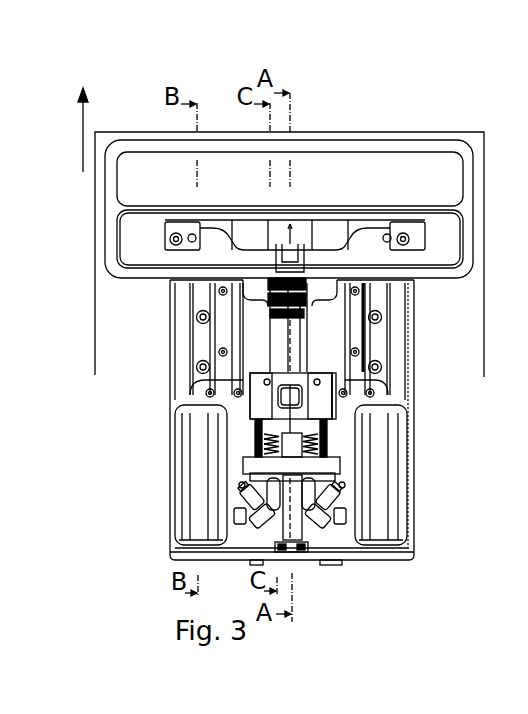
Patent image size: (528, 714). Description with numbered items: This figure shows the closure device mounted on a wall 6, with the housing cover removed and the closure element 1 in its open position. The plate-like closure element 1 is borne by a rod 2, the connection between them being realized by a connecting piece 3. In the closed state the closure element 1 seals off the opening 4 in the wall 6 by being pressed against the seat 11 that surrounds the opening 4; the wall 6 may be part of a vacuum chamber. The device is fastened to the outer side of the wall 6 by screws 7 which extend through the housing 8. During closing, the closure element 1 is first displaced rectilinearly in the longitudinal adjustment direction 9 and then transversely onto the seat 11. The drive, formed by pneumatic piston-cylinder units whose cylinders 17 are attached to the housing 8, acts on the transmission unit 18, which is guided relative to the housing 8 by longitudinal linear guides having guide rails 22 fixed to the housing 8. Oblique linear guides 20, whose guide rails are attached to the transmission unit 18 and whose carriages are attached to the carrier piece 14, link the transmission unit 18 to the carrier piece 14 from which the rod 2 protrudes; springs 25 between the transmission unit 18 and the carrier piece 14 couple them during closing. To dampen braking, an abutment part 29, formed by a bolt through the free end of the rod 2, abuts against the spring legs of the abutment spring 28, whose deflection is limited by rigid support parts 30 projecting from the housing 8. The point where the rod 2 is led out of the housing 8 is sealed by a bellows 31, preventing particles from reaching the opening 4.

The closure element 1 is at (130, 243).
The rod 2 is at (290, 343).
The connecting piece 3 is at (232, 228).
The opening 4 is at (138, 173).
The wall 6 is at (475, 140).
The screws 7 is at (203, 318).
The housing 8 is at (170, 394).
The longitudinal adjustment direction 9 is at (83, 150).
The seat 11 is at (422, 148).
The carrier piece 14 is at (302, 420).
The cylinders 17 is at (197, 520).
The transmission unit 18 is at (237, 473).
The oblique linear guide 20 is at (333, 405).
The guide rail 22 is at (222, 297).
The springs 25 is at (312, 445).
The abutment spring 28 is at (266, 504).
The abutment part 29 is at (306, 549).
The support part 30 is at (268, 483).
The bellows 31 is at (303, 272).